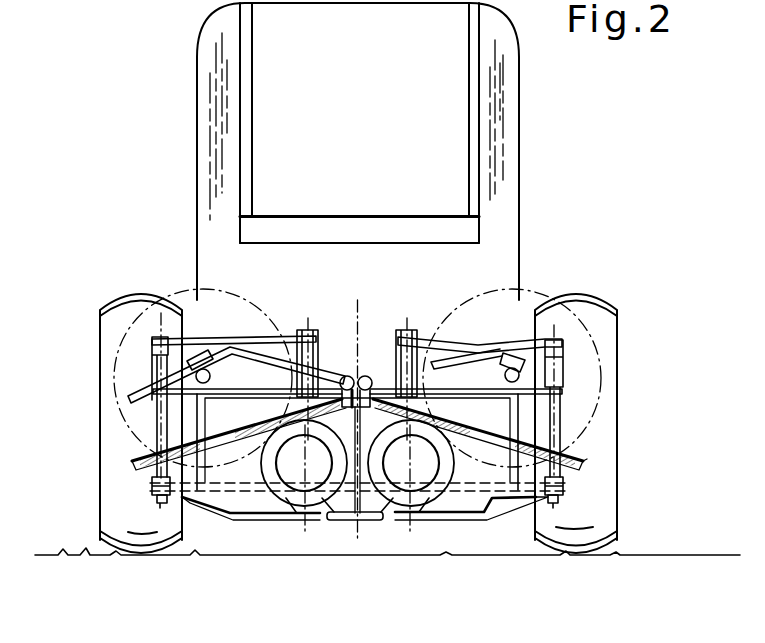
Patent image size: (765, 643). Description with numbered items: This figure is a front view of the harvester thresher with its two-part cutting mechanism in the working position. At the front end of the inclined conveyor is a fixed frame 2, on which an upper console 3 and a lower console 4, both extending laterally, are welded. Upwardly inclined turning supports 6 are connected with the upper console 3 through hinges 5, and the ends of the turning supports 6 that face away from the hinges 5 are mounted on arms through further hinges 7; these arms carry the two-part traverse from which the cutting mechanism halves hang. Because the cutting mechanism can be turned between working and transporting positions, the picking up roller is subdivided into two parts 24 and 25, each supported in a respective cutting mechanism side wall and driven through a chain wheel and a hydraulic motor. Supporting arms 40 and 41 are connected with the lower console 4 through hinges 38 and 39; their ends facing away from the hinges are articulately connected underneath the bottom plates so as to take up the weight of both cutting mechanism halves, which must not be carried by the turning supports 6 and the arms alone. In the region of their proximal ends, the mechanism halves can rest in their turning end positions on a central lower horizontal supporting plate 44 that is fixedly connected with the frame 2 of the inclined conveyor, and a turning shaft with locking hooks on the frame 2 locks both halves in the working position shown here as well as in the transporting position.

The fixed frame 2 is at (513, 424).
The upper console 3 is at (197, 404).
The lower console 4 is at (152, 484).
The hinge 5 is at (158, 337).
The turning support 6 is at (203, 340).
The further hinge 7 is at (313, 338).
The picking up roller part 24 is at (413, 494).
The picking up roller part 25 is at (303, 507).
The hinge 38 is at (553, 502).
The hinge 39 is at (162, 503).
The supporting arm 40 is at (487, 523).
The supporting arm 41 is at (227, 522).
The central lower horizontal supporting plate 44 is at (357, 520).